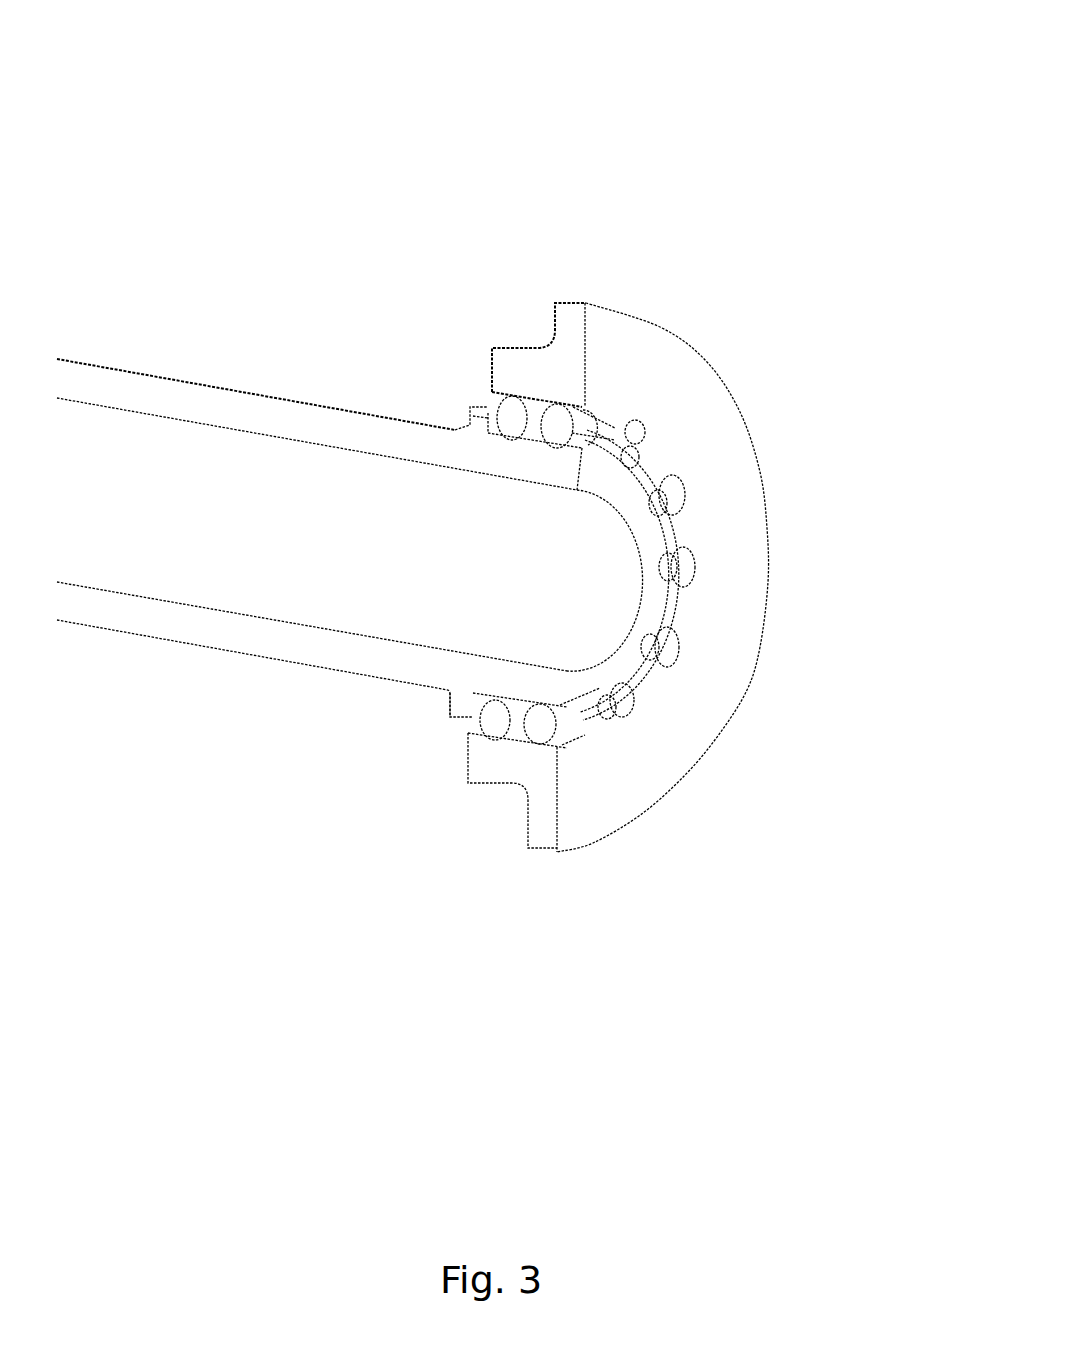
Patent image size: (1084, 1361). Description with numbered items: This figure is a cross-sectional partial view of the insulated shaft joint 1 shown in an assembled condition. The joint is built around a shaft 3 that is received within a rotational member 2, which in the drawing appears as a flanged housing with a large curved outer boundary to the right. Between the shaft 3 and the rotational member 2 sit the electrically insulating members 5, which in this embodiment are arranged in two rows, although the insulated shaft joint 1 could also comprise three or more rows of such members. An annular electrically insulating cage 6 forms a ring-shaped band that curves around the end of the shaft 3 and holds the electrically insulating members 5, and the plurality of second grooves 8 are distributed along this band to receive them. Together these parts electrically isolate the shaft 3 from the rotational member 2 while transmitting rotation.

The insulated shaft joint 1 is at (748, 138).
The rotational member 2 is at (687, 715).
The shaft 3 is at (243, 468).
The electrically insulating members 5 is at (537, 730).
The annular electrically insulating cage 6 is at (682, 538).
The second grooves 8 is at (638, 434).